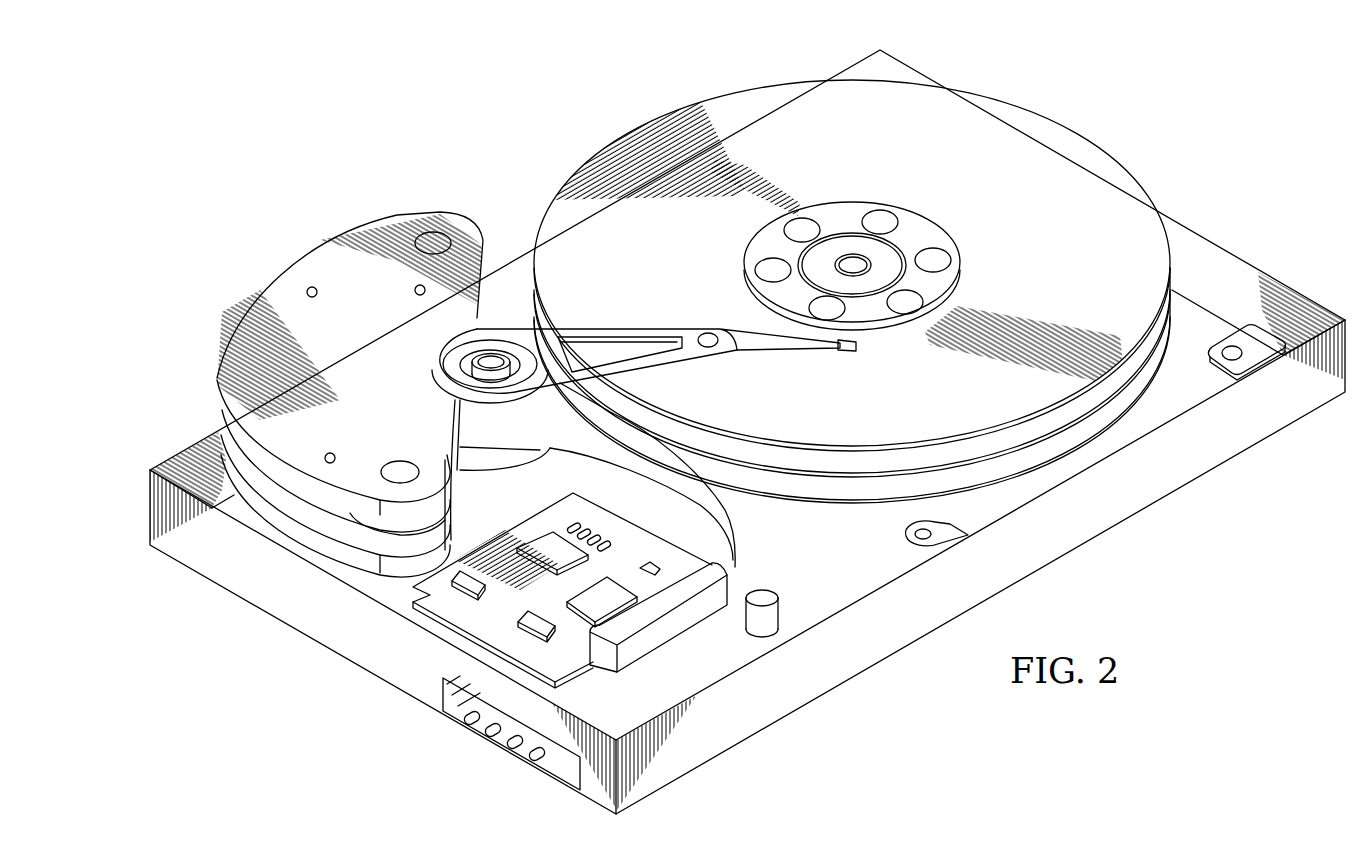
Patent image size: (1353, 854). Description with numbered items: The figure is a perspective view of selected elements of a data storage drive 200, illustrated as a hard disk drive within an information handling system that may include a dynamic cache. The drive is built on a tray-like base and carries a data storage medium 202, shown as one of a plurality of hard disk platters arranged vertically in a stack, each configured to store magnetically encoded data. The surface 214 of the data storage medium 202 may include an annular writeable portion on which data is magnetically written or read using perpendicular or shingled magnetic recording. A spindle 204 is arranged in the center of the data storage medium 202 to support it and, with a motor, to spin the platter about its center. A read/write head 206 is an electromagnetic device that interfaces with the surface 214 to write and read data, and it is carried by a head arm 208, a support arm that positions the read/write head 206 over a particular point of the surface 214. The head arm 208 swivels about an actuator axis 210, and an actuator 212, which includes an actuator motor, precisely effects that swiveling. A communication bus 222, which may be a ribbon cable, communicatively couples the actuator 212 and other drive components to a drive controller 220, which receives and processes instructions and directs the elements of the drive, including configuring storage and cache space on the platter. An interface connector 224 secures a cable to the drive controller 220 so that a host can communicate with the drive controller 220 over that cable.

The data storage drive 200 is at (430, 148).
The data storage medium 202 is at (1067, 142).
The spindle 204 is at (917, 232).
The read/write head 206 is at (843, 343).
The head arm 208 is at (777, 352).
The actuator axis 210 is at (491, 352).
The actuator 212 is at (292, 275).
The surface 214 is at (1071, 261).
The drive controller 220 is at (480, 633).
The communication bus 222 is at (742, 538).
The interface connector 224 is at (486, 758).